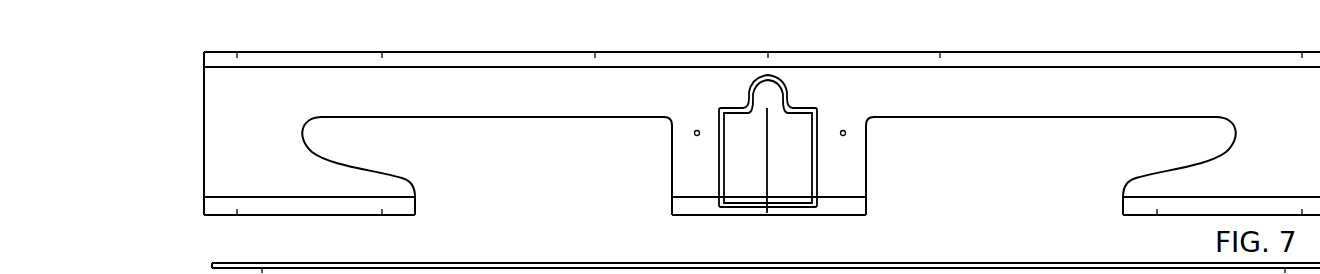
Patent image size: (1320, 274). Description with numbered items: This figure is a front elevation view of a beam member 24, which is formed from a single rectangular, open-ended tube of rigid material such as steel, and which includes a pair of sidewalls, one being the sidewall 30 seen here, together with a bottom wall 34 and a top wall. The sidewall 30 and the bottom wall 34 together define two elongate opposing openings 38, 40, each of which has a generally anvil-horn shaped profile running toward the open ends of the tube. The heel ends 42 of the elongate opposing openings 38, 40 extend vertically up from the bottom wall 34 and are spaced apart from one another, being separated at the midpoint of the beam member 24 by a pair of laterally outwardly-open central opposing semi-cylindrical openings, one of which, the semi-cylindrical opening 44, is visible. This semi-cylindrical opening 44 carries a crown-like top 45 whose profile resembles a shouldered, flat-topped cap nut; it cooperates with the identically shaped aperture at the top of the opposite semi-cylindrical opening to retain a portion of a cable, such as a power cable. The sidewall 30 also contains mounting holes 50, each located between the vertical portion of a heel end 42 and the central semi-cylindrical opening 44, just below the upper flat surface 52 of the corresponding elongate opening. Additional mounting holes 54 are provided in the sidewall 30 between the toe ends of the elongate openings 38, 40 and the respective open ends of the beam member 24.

The beam member 24 is at (198, 135).
The sidewall 30 is at (615, 93).
The bottom wall 34 is at (864, 208).
The elongate opposing opening 38 is at (523, 160).
The elongate opposing opening 40 is at (1012, 160).
The heel end 42 is at (668, 150).
The central opposing semi-cylindrical opening 44 is at (768, 179).
The crown-like top 45 is at (780, 93).
The mounting hole 50 is at (697, 133).
The upper flat surface 52 is at (1042, 117).
The additional mounting hole 54 is at (253, 133).